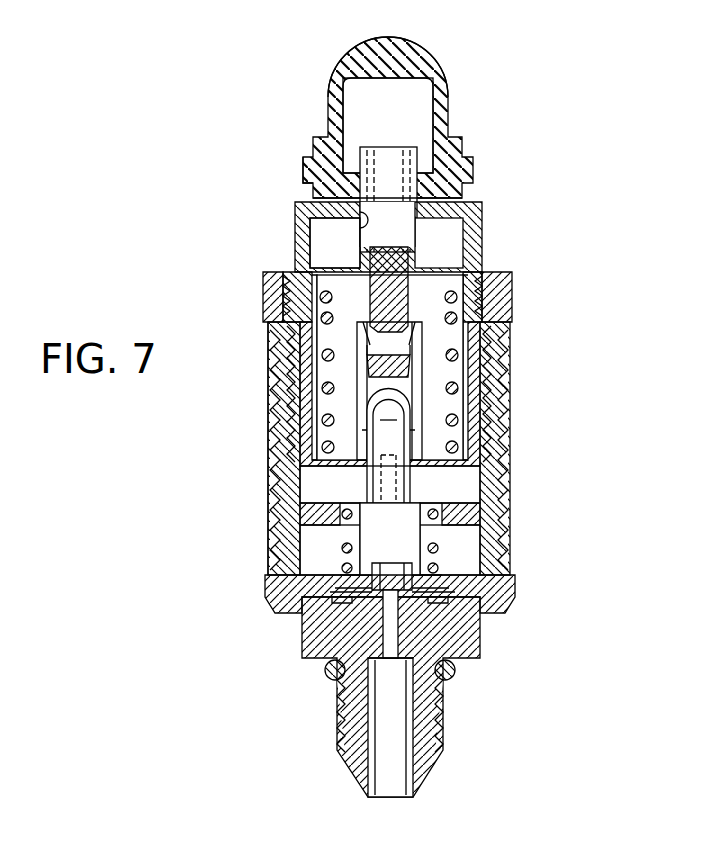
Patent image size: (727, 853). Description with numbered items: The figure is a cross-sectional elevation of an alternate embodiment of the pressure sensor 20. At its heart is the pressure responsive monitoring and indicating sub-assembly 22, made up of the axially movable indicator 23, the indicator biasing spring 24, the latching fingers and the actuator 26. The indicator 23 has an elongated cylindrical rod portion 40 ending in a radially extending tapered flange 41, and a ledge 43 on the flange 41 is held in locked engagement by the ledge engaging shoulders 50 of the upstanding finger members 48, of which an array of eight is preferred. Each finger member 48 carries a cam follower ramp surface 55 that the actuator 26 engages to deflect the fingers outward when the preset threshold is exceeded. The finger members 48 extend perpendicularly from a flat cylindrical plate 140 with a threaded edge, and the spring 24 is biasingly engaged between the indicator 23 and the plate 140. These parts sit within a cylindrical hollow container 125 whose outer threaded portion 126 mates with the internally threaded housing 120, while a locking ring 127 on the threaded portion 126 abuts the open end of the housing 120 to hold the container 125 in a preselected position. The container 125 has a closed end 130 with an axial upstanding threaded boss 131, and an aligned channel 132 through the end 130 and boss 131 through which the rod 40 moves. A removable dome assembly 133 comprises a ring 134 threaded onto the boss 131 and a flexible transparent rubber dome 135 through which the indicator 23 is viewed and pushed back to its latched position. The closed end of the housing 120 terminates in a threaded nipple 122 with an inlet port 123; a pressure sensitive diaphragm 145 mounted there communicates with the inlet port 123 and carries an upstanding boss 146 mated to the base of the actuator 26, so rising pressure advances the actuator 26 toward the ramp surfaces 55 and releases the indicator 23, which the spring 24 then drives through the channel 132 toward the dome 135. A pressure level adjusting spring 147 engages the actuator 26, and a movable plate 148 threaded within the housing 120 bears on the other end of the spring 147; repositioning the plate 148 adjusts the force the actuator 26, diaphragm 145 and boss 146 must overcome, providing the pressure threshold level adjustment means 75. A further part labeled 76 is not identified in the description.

The pressure sensor 20 is at (590, 288).
The pressure responsive monitoring and indicating sub-assembly 22 is at (335, 340).
The indicator 23 is at (395, 195).
The indicator biasing spring 24 is at (450, 313).
The actuator 26 is at (400, 482).
The rod portion 40 is at (388, 125).
The tapered flange 41 is at (395, 372).
The ledge 43 is at (382, 330).
The finger members 48 is at (412, 333).
The ledge engaging shoulders 50 is at (395, 364).
The cam follower ramp surface 55 is at (378, 412).
The pressure threshold level adjustment means 75 is at (405, 372).
The piston head 76 is at (392, 415).
The housing 120 is at (512, 430).
The threaded nipple 122 is at (432, 772).
The inlet port 123 is at (388, 800).
The container 125 is at (492, 236).
The threaded portion 126 is at (262, 310).
The locking ring 127 is at (262, 289).
The closed end 130 is at (293, 272).
The boss 131 is at (450, 194).
The channel 132 is at (362, 232).
The dome assembly 133 is at (440, 52).
The ring 134 is at (300, 168).
The rubber dome 135 is at (343, 60).
The plate 140 is at (350, 470).
The diaphragm 145 is at (495, 603).
The boss 146 is at (400, 598).
The pressure level adjusting spring 147 is at (342, 546).
The movable plate 148 is at (512, 535).